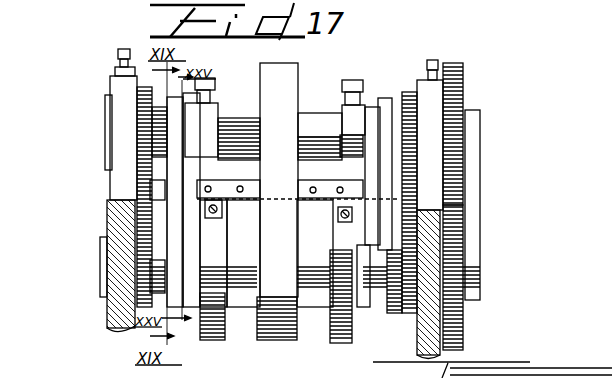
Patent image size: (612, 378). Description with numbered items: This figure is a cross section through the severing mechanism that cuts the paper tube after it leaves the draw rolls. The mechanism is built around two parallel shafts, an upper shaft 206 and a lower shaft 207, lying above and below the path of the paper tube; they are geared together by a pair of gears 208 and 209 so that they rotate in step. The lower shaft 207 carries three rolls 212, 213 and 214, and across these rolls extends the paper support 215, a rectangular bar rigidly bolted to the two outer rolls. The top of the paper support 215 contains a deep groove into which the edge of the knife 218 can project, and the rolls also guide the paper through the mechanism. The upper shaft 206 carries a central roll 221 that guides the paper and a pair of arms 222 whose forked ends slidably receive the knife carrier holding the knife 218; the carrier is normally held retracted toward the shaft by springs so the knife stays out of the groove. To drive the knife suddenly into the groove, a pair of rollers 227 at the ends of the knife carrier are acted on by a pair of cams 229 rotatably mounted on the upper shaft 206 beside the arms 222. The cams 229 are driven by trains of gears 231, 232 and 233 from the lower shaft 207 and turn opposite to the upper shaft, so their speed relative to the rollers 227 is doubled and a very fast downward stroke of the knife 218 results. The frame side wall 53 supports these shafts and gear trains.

The frame side wall 53 is at (114, 316).
The upper shaft 206 is at (311, 132).
The lower shaft 207 is at (377, 292).
The gear 208 is at (458, 95).
The gear 209 is at (458, 229).
The lower roll 212 is at (212, 326).
The lower roll 213 is at (284, 324).
The lower roll 214 is at (327, 330).
The paper support 215 is at (318, 212).
The knife 218 is at (334, 168).
The central roll 221 is at (284, 80).
The arms 222 is at (205, 113).
The rollers 227 is at (384, 175).
The cams 229 is at (176, 113).
The gear 231 is at (138, 260).
The gear 232 is at (136, 186).
The gear 233 is at (138, 135).